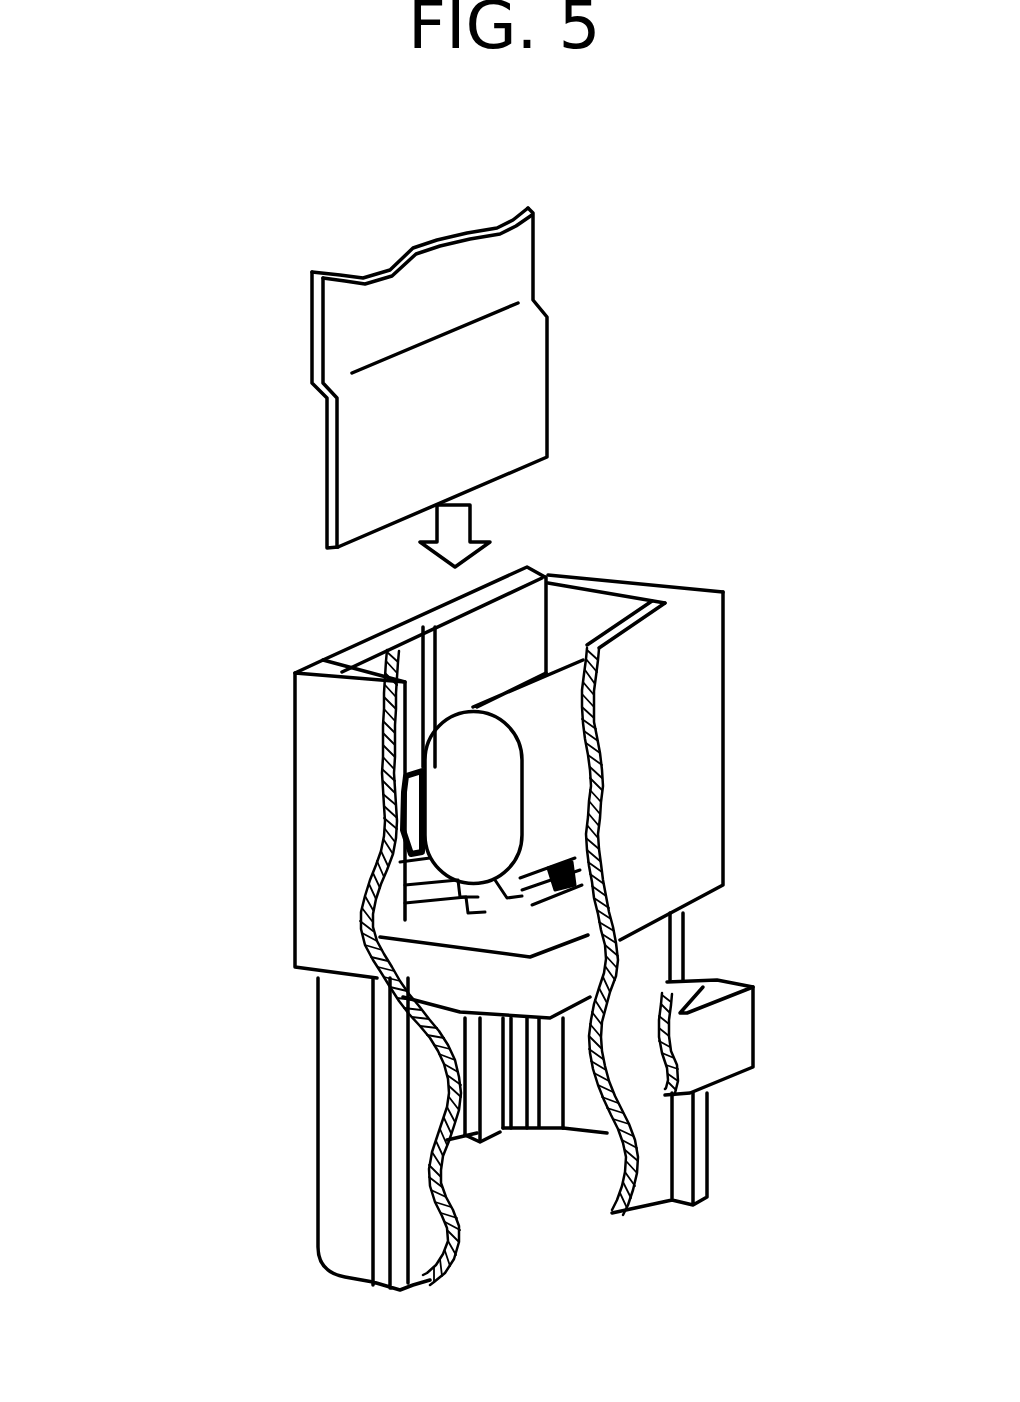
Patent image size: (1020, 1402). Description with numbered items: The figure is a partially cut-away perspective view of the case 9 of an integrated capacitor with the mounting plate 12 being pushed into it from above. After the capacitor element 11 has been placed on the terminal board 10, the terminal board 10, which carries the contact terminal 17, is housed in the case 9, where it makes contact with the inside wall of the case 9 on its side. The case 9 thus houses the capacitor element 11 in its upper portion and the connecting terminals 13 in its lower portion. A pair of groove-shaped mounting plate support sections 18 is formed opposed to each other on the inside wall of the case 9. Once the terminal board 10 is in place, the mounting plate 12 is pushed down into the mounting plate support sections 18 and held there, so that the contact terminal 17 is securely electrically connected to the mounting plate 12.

The case 9 is at (645, 958).
The terminal board 10 is at (468, 983).
The capacitor element 11 is at (490, 798).
The mounting plate 12 is at (487, 398).
The connecting terminals 13 is at (493, 1120).
The contact terminal 17 is at (413, 807).
The mounting plate support section 18 is at (323, 663).